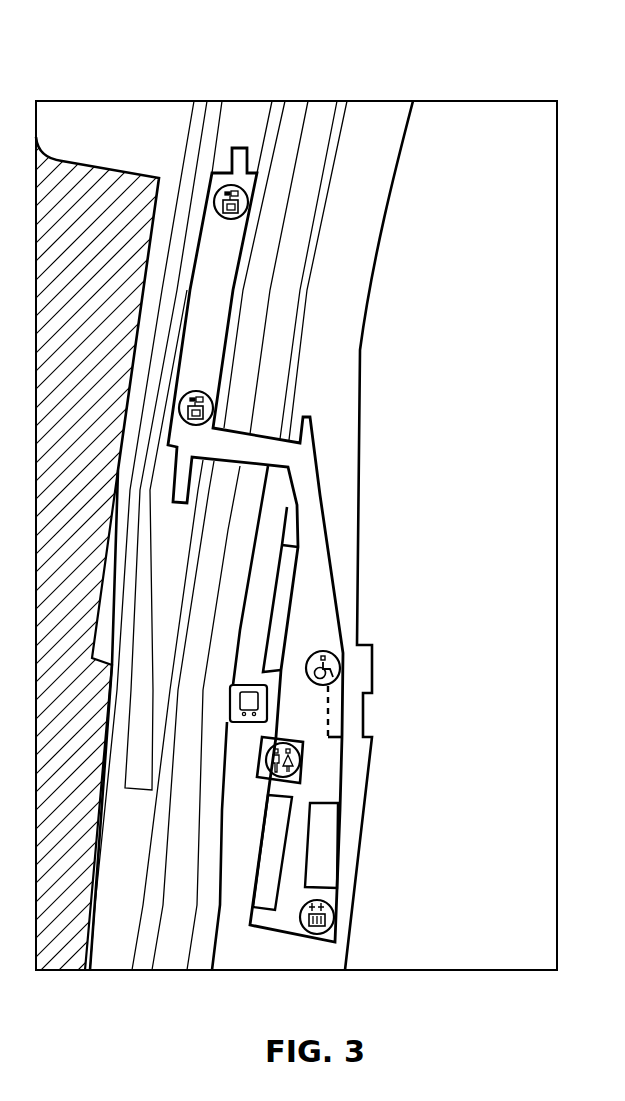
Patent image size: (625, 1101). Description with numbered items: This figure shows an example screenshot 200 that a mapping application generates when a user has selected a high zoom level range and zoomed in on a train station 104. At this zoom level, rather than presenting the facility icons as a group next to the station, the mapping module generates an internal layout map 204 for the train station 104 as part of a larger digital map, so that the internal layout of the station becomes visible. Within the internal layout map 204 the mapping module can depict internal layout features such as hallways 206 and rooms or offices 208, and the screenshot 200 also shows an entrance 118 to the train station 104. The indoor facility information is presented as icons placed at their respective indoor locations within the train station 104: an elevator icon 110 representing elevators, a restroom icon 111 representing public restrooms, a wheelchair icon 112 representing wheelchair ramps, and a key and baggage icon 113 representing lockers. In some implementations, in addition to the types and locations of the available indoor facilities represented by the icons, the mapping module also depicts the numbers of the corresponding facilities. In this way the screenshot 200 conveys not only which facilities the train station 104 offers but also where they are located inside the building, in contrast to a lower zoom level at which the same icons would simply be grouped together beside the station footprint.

The screenshot 200 is at (502, 62).
The train station 104 is at (323, 463).
The internal layout map 204 is at (305, 532).
The key and baggage icon 113 is at (227, 222).
The wheelchair icon 112 is at (313, 650).
The entrance 118 is at (333, 692).
The restroom icon 111 is at (300, 760).
The rooms or offices 208 is at (323, 833).
The hallways 206 is at (290, 863).
The elevator icon 110 is at (333, 917).